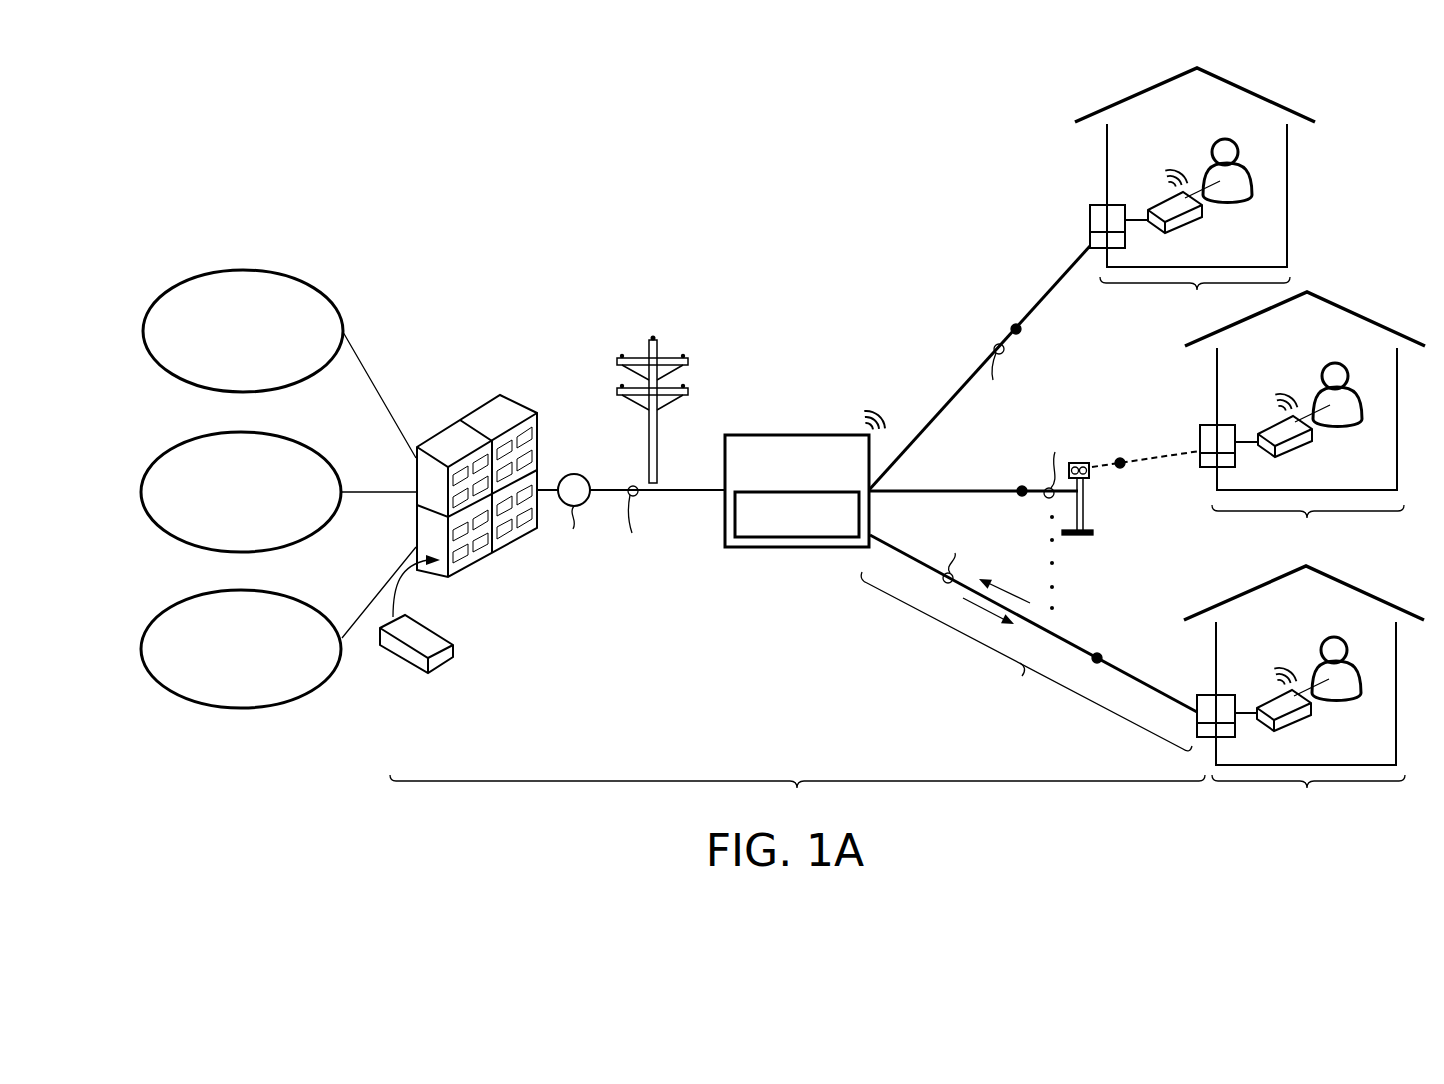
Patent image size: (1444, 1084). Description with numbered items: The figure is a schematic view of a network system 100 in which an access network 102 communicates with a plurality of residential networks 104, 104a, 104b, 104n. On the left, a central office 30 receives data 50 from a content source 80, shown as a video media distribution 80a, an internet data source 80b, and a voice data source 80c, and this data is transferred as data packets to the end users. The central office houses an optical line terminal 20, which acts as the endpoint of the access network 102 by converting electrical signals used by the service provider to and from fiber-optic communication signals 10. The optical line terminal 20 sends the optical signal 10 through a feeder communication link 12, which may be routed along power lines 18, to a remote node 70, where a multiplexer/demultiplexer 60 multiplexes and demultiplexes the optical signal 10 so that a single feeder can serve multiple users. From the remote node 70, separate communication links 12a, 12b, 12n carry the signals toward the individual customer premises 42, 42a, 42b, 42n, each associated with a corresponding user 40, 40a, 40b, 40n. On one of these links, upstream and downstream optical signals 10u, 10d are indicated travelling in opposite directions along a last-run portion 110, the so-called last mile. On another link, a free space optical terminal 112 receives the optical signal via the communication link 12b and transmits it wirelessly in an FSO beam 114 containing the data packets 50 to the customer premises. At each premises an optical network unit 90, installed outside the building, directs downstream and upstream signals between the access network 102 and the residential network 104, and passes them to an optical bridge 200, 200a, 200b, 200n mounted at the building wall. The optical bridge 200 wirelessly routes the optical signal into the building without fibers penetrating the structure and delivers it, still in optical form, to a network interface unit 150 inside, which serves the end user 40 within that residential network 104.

The network system 100 is at (428, 212).
The content source 80 is at (242, 475).
The video media distribution 80a is at (221, 271).
The internet data source 80b is at (221, 432).
The voice data source 80c is at (223, 591).
The central office 30 is at (519, 399).
The optical line terminal 20 is at (420, 672).
The data 50 is at (575, 473).
The power lines 18 is at (660, 357).
The communication links 12 is at (929, 479).
The communication link 12a is at (958, 393).
The communication link 12b is at (978, 488).
The communication link 12n is at (900, 550).
The communication signals 10 is at (838, 490).
The upstream optical signal 10u is at (1005, 587).
The downstream optical signal 10d is at (987, 617).
The remote node 70 is at (801, 435).
The multiplexer/demultiplexer 60 is at (795, 548).
The free space optical terminal 112 is at (1088, 537).
The FSO beam 114 is at (1156, 463).
The last-run portion 110 is at (1026, 661).
The optical bridge 200 is at (1115, 467).
The optical bridge 200a is at (1090, 222).
The optical bridge 200b is at (1200, 441).
The optical bridge 200n is at (1197, 700).
The optical network unit 90 is at (1090, 246).
The customer premises 42 is at (1250, 408).
The customer premises 42a is at (1250, 93).
The customer premises 42b is at (1360, 317).
The customer premises 42n is at (1359, 591).
The user 40 is at (1290, 444).
The user 40a is at (1226, 205).
The user 40b is at (1336, 429).
The user 40n is at (1335, 703).
The network interface unit 150 is at (1150, 205).
The residential networks 104 is at (1252, 545).
The residential network 104a is at (1195, 296).
The residential network 104b is at (1308, 525).
The residential network 104n is at (1308, 794).
The access network 102 is at (797, 793).